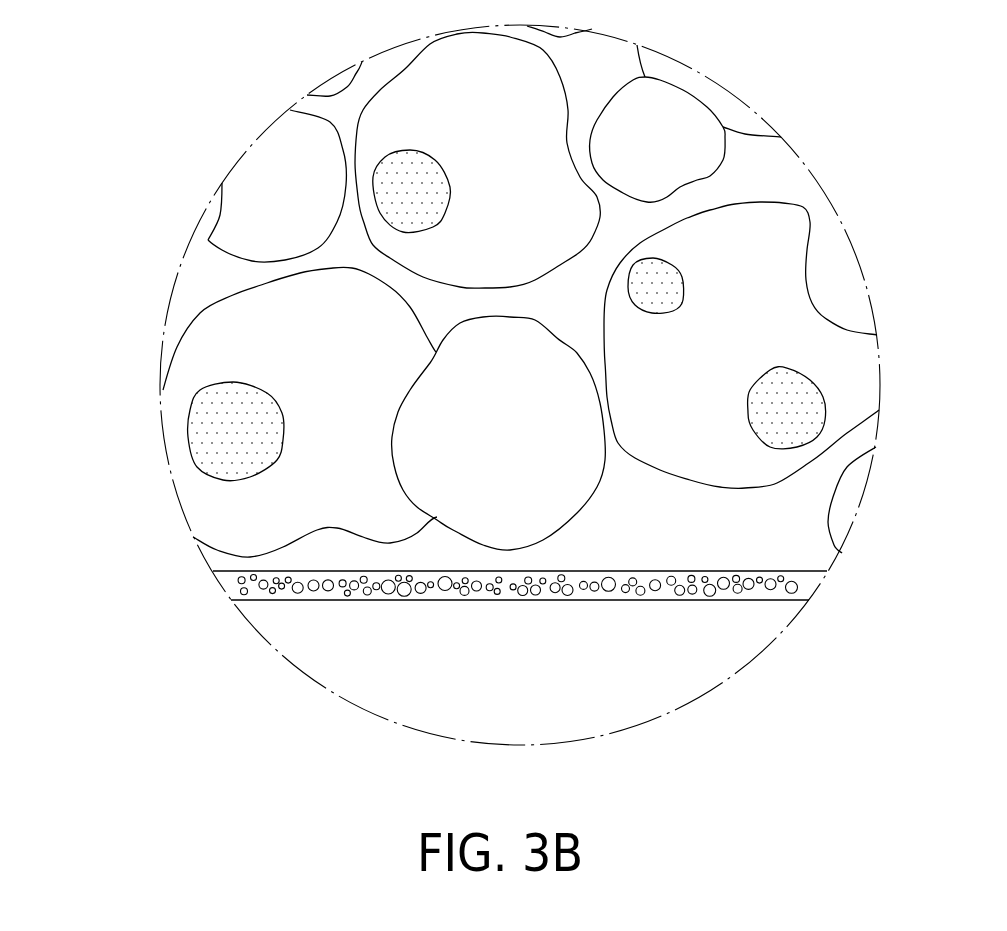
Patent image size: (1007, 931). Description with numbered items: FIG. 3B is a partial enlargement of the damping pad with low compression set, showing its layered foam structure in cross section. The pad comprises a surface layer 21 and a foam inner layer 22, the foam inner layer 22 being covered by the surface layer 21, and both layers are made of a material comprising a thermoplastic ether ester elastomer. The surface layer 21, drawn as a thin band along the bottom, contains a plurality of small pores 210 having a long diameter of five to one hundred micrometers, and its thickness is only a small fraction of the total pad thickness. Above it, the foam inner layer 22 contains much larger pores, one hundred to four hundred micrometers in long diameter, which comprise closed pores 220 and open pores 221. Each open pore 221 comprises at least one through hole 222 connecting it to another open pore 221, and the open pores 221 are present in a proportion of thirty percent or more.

The surface layer 21 is at (227, 572).
The pores 210 is at (233, 592).
The foam inner layer 22 is at (203, 281).
The closed pores 220 is at (547, 473).
The open pores 221 is at (775, 280).
The through hole 222 is at (810, 413).